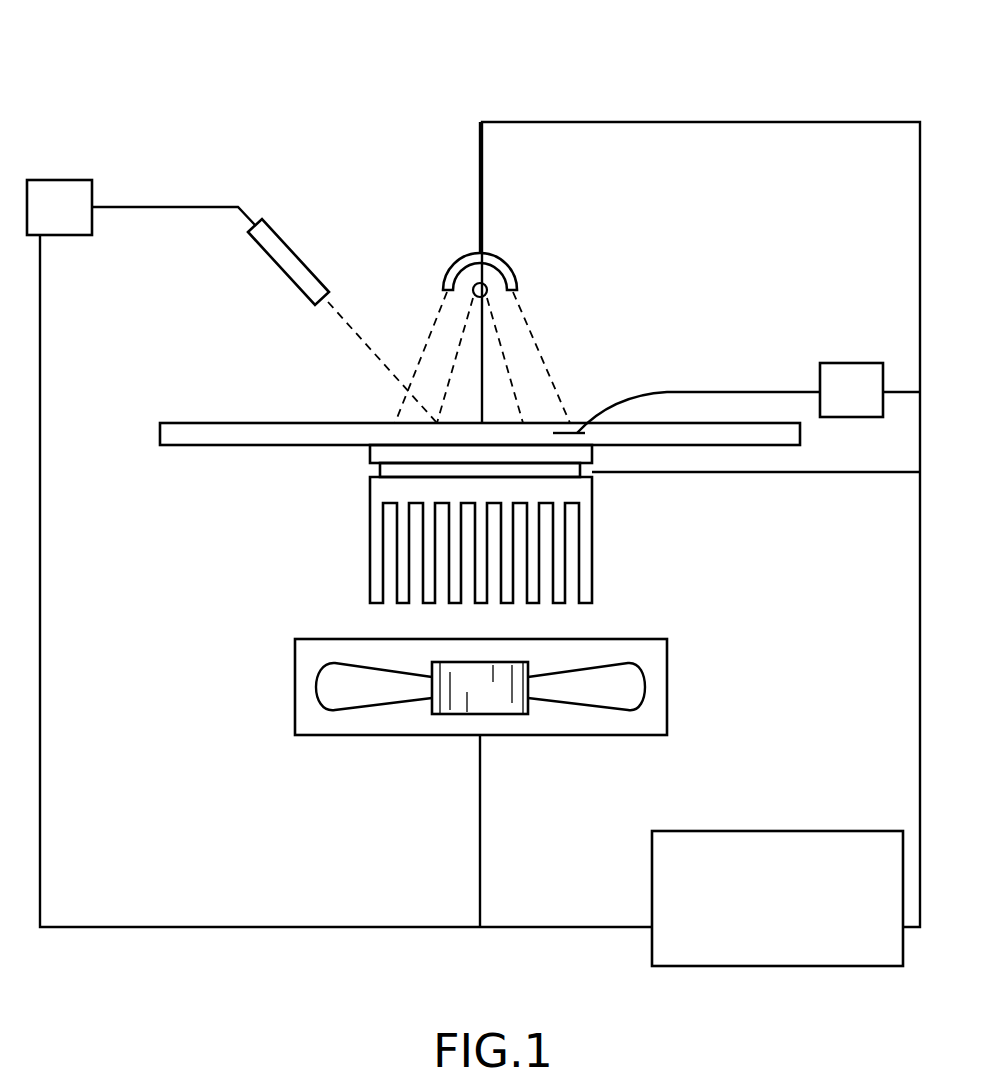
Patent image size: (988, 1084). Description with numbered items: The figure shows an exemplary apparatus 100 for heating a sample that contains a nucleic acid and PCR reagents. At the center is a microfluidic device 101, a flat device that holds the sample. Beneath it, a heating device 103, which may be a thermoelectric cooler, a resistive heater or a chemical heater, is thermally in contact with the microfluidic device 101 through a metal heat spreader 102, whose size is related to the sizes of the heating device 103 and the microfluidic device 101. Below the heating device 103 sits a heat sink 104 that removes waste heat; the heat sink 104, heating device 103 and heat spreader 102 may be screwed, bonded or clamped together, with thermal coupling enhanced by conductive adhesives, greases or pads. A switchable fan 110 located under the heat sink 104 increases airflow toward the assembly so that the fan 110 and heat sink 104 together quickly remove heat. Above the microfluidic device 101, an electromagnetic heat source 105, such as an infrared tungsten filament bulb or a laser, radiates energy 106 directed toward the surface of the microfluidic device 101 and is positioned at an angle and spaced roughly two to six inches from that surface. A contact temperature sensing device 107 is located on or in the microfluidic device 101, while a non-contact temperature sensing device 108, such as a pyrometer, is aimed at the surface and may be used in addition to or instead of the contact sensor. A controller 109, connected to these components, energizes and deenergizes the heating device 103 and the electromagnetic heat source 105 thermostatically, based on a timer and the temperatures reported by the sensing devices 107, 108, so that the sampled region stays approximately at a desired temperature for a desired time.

The apparatus 100 is at (196, 135).
The microfluidic device 101 is at (187, 446).
The heat spreader 102 is at (370, 455).
The heating device 103 is at (382, 470).
The heat sink 104 is at (370, 550).
The electromagnetic heat source 105 is at (513, 263).
The energy 106 is at (532, 340).
The contact temperature sensing device 107 is at (853, 363).
The non-contact temperature sensing device 108 is at (69, 235).
The controller 109 is at (825, 831).
The fan 110 is at (667, 677).